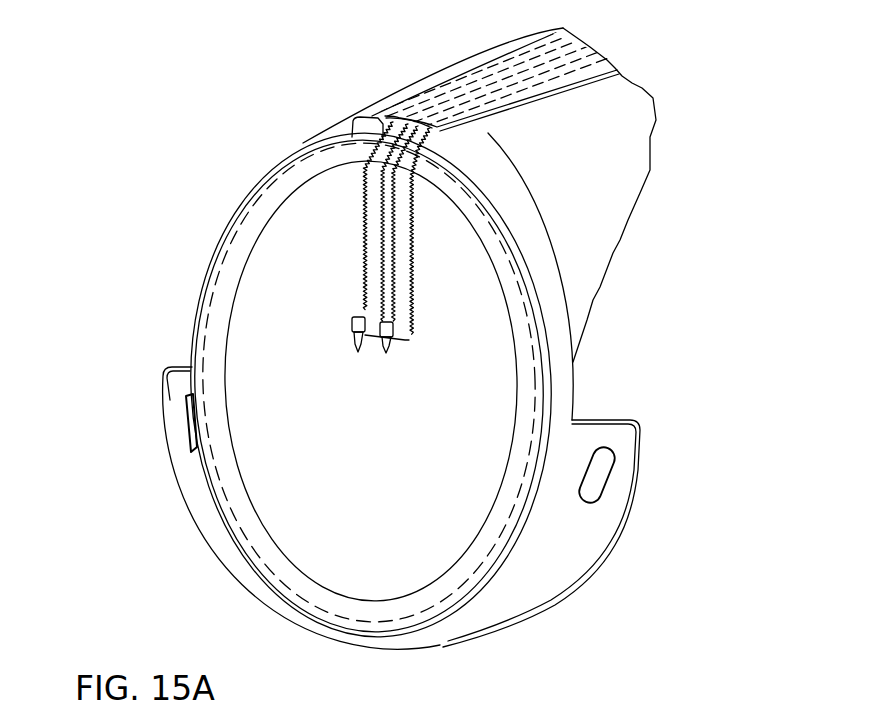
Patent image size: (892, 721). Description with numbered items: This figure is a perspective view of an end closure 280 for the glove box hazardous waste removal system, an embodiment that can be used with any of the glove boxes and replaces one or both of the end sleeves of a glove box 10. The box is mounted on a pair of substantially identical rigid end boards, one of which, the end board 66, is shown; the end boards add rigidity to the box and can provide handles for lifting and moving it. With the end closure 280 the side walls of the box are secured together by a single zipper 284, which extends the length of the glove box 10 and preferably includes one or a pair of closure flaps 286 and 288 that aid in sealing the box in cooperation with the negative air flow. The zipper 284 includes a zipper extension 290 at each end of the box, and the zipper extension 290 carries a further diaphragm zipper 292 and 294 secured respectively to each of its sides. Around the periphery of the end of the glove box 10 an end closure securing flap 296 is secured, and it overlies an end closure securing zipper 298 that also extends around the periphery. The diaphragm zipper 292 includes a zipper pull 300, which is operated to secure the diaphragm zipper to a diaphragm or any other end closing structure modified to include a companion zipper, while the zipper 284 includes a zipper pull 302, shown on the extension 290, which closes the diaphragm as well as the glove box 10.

The glove box 10 is at (604, 215).
The rigid end board 66 is at (620, 478).
The end closure 280 is at (319, 385).
The zipper 284 is at (418, 108).
The closure flap 286 is at (368, 117).
The closure flap 288 is at (517, 107).
The zipper extension 290 is at (378, 249).
The diaphragm zipper 292 is at (362, 282).
The diaphragm zipper 294 is at (407, 298).
The end closure securing flap 296 is at (518, 355).
The end closure securing zipper 298 is at (196, 366).
The zipper pull 300 is at (357, 354).
The zipper pull 302 is at (387, 355).